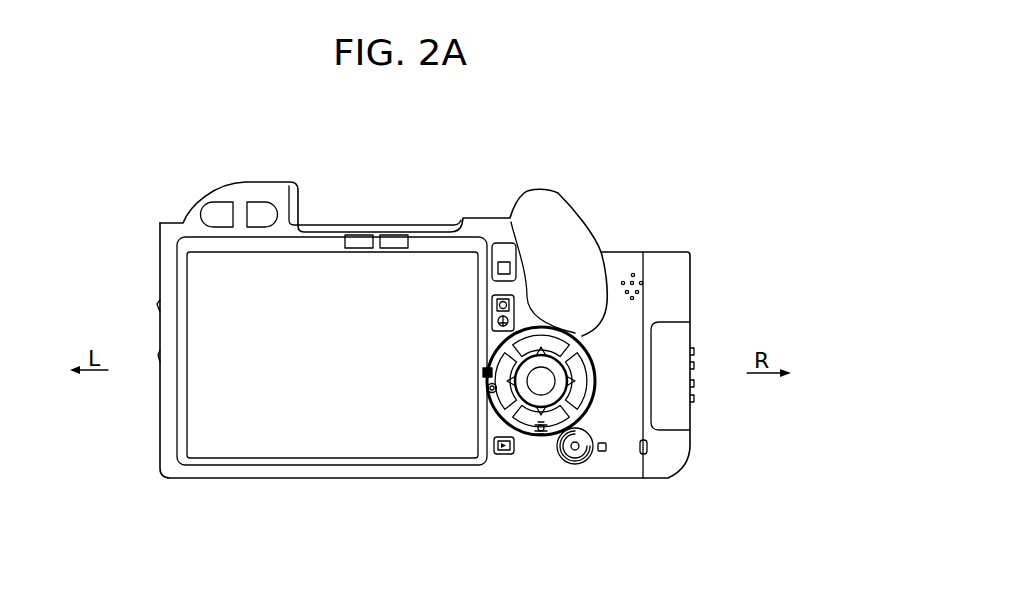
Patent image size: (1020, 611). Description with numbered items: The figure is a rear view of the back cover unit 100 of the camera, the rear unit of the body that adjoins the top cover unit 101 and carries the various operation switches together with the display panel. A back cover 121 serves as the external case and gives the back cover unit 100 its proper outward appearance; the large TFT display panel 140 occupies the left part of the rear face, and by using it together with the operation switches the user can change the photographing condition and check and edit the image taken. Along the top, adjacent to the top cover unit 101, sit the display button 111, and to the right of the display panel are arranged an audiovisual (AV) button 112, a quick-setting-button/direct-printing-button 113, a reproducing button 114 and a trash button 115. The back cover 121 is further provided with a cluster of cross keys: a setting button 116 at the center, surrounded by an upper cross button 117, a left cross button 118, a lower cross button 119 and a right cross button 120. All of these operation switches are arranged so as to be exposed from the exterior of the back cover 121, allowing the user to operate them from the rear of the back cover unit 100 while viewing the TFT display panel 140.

The back cover unit 100 is at (380, 186).
The top cover unit 101 is at (214, 212).
The display button 111 is at (258, 207).
The audiovisual (AV) button 112 is at (493, 243).
The quick-setting-button/direct-printing-button 113 is at (517, 303).
The reproducing button 114 is at (503, 455).
The trash button 115 is at (580, 458).
The setting button 116 is at (548, 388).
The upper cross button 117 is at (567, 343).
The left cross button 118 is at (503, 400).
The lower cross button 119 is at (552, 437).
The right cross button 120 is at (577, 366).
The back cover 121 is at (193, 450).
The TFT display panel 140 is at (240, 447).